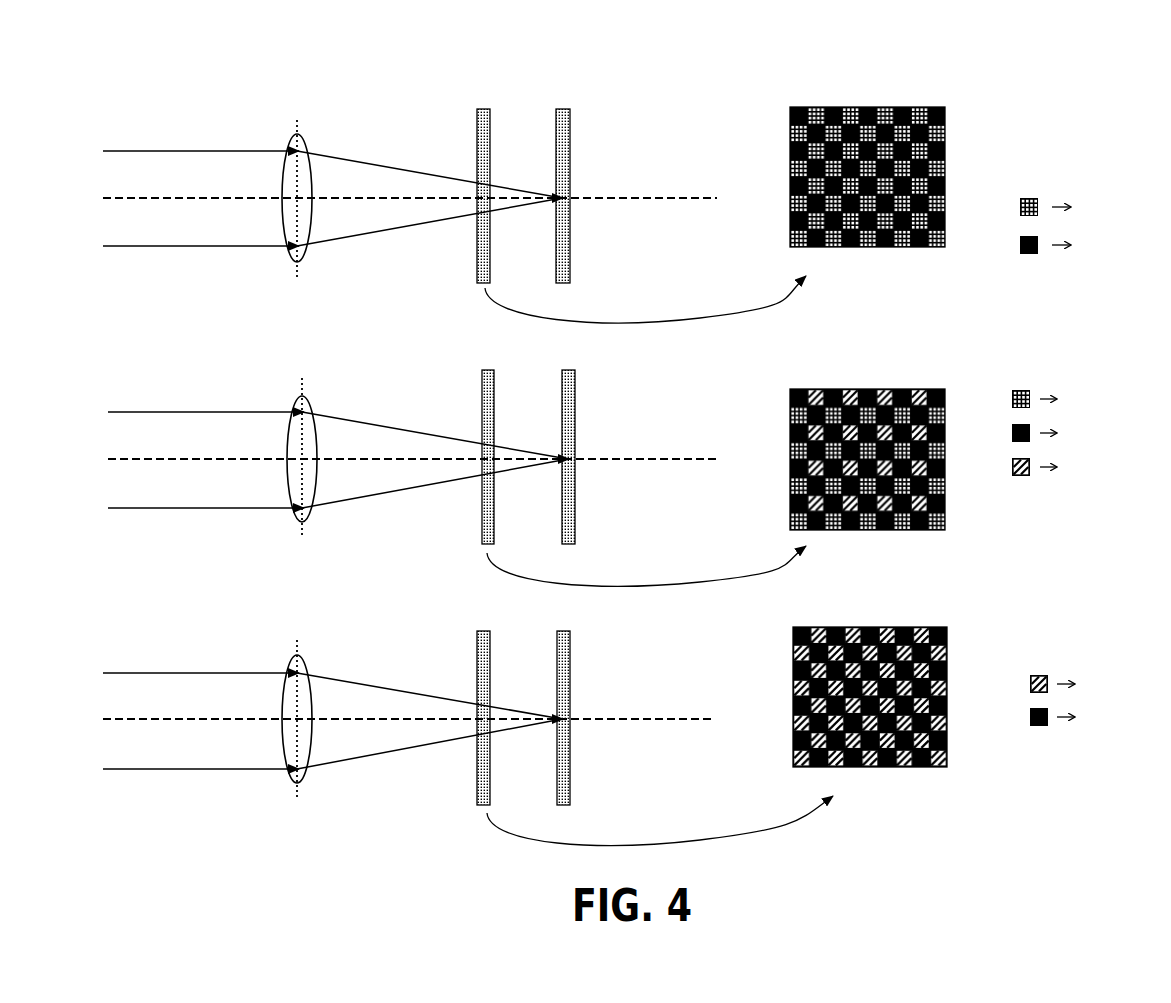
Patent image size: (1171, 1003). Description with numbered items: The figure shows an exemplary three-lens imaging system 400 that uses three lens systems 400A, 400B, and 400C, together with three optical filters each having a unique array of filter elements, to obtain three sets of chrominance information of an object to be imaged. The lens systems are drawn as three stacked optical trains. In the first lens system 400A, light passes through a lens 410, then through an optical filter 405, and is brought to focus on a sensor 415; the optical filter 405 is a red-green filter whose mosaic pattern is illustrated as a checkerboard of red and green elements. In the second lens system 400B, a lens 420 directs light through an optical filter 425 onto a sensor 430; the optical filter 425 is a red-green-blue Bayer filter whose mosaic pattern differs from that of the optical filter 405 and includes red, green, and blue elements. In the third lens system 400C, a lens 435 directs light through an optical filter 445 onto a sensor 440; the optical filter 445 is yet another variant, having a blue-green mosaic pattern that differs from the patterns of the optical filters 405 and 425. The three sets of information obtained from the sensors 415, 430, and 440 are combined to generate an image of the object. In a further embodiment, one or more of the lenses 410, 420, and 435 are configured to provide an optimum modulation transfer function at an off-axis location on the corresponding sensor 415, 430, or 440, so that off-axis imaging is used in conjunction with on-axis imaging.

The three-lens imaging system 400 is at (760, 57).
The lens system 400A is at (195, 108).
The lens system 400B is at (195, 360).
The lens system 400C is at (197, 612).
The optical filter 405 is at (470, 128).
The lens 410 is at (307, 150).
The sensor 415 is at (580, 128).
The lens 420 is at (312, 412).
The optical filter 425 is at (473, 389).
The sensor 430 is at (585, 389).
The lens 435 is at (307, 672).
The sensor 440 is at (580, 650).
The optical filter 445 is at (470, 650).